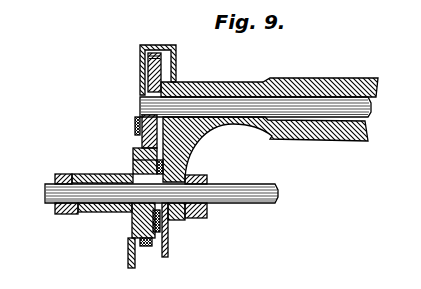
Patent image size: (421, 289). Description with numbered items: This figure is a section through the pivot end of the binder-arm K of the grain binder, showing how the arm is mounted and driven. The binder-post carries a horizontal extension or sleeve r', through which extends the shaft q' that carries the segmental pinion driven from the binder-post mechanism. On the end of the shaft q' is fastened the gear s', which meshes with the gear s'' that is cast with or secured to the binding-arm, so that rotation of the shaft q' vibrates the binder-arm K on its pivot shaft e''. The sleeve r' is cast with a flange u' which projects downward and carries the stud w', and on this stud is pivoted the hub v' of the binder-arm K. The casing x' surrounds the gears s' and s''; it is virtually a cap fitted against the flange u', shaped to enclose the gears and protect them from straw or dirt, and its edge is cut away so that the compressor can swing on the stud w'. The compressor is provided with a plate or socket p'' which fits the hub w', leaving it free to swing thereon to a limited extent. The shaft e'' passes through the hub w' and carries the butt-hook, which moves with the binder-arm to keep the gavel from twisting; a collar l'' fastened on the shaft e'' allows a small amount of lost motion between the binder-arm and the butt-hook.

The casing x' is at (142, 70).
The gear s' is at (173, 72).
The binder-arm K is at (135, 121).
The sleeve r' is at (269, 76).
The shaft q' is at (266, 112).
The flange u' is at (265, 149).
The hub of the binder-arm v' is at (102, 163).
The gear s'' is at (133, 160).
The shaft e'' is at (149, 191).
The collar l'' is at (65, 222).
The stud w' is at (105, 222).
The plate or socket p'' is at (183, 230).